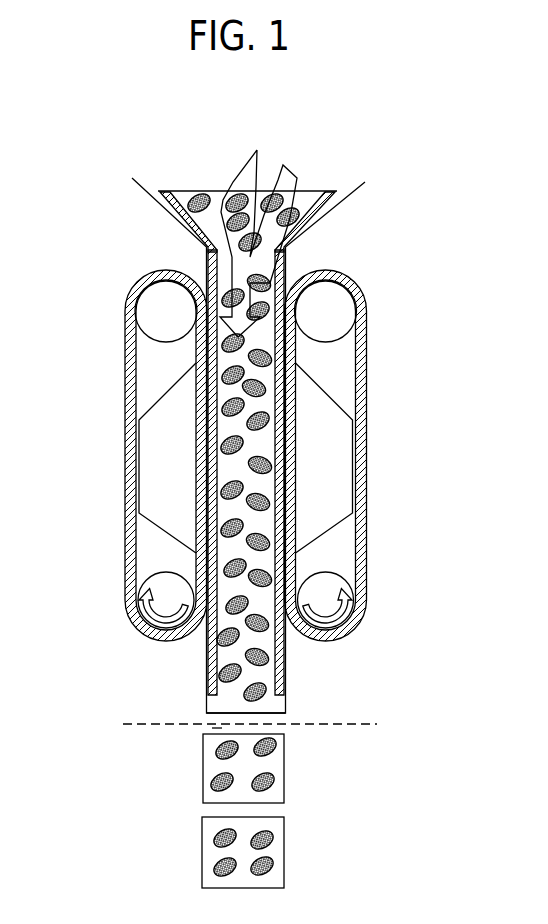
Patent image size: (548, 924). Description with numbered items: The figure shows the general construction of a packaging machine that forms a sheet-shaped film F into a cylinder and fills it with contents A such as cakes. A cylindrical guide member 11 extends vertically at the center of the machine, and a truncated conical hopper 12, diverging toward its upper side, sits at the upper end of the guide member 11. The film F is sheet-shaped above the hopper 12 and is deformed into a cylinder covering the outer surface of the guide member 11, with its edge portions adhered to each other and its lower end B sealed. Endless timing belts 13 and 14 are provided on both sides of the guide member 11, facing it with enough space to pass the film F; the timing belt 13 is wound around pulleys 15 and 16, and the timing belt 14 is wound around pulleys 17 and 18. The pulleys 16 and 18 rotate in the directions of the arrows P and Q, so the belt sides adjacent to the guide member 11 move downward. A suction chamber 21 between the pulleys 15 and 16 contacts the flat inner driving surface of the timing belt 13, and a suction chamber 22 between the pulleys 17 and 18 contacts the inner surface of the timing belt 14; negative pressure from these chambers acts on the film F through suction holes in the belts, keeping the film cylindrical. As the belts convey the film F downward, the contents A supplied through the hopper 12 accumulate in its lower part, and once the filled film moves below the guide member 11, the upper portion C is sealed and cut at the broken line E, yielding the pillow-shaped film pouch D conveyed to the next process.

The hopper 12 is at (179, 190).
The contents A is at (220, 861).
The film F is at (349, 193).
The guide member 11 is at (288, 262).
The pulley 17 is at (152, 299).
The pulley 15 is at (340, 298).
The timing belt 13 is at (367, 350).
The timing belt 14 is at (126, 408).
The suction chamber 21 is at (338, 462).
The suction chamber 22 is at (157, 496).
The pulley 18 is at (141, 590).
The pulley 16 is at (334, 580).
The arrow P is at (353, 621).
The arrow Q is at (151, 640).
The lower end B is at (275, 716).
The upper portion C is at (217, 731).
The film pouch D is at (285, 751).
The broken line E is at (261, 724).